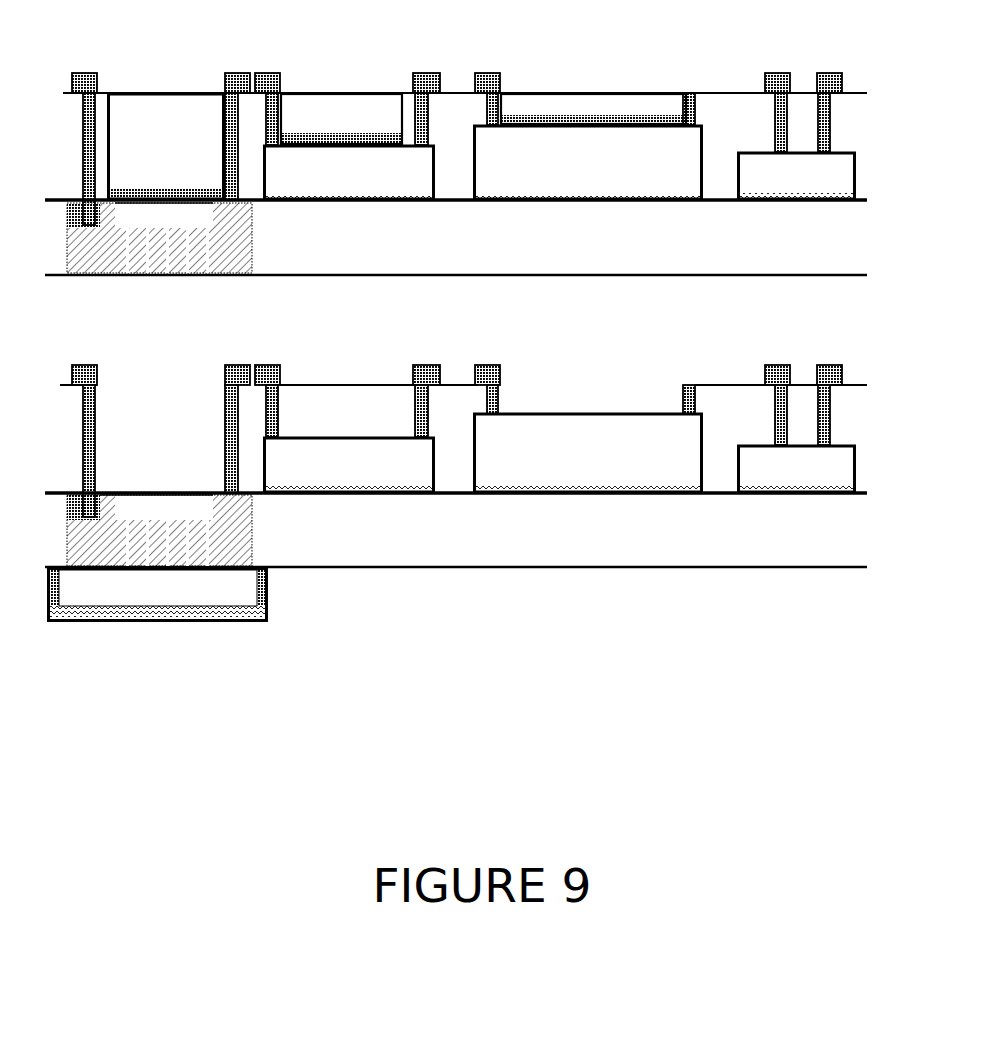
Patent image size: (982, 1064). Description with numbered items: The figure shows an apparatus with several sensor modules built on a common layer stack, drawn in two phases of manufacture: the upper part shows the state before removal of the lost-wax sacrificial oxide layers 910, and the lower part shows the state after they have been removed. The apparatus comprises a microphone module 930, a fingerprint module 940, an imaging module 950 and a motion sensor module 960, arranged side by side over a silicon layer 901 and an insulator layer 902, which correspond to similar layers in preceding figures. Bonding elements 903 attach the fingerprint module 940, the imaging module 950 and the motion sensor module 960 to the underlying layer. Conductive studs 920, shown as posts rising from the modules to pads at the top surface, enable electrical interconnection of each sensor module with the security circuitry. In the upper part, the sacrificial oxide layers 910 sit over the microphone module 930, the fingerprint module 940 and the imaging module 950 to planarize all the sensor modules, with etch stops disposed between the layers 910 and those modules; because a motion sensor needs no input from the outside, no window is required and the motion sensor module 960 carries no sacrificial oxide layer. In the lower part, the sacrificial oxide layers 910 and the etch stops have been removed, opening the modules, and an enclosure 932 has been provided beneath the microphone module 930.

The silicon layer 901 is at (463, 260).
The insulator layer 902 is at (456, 372).
The bonding elements 903 is at (733, 203).
The lost-wax sacrificial oxide layers 910 is at (648, 36).
The conductive studs 920 is at (90, 130).
The microphone module 930 is at (195, 215).
The enclosure 932 is at (167, 618).
The fingerprint module 940 is at (349, 319).
The imaging module 950 is at (588, 309).
The motion sensor module 960 is at (797, 322).